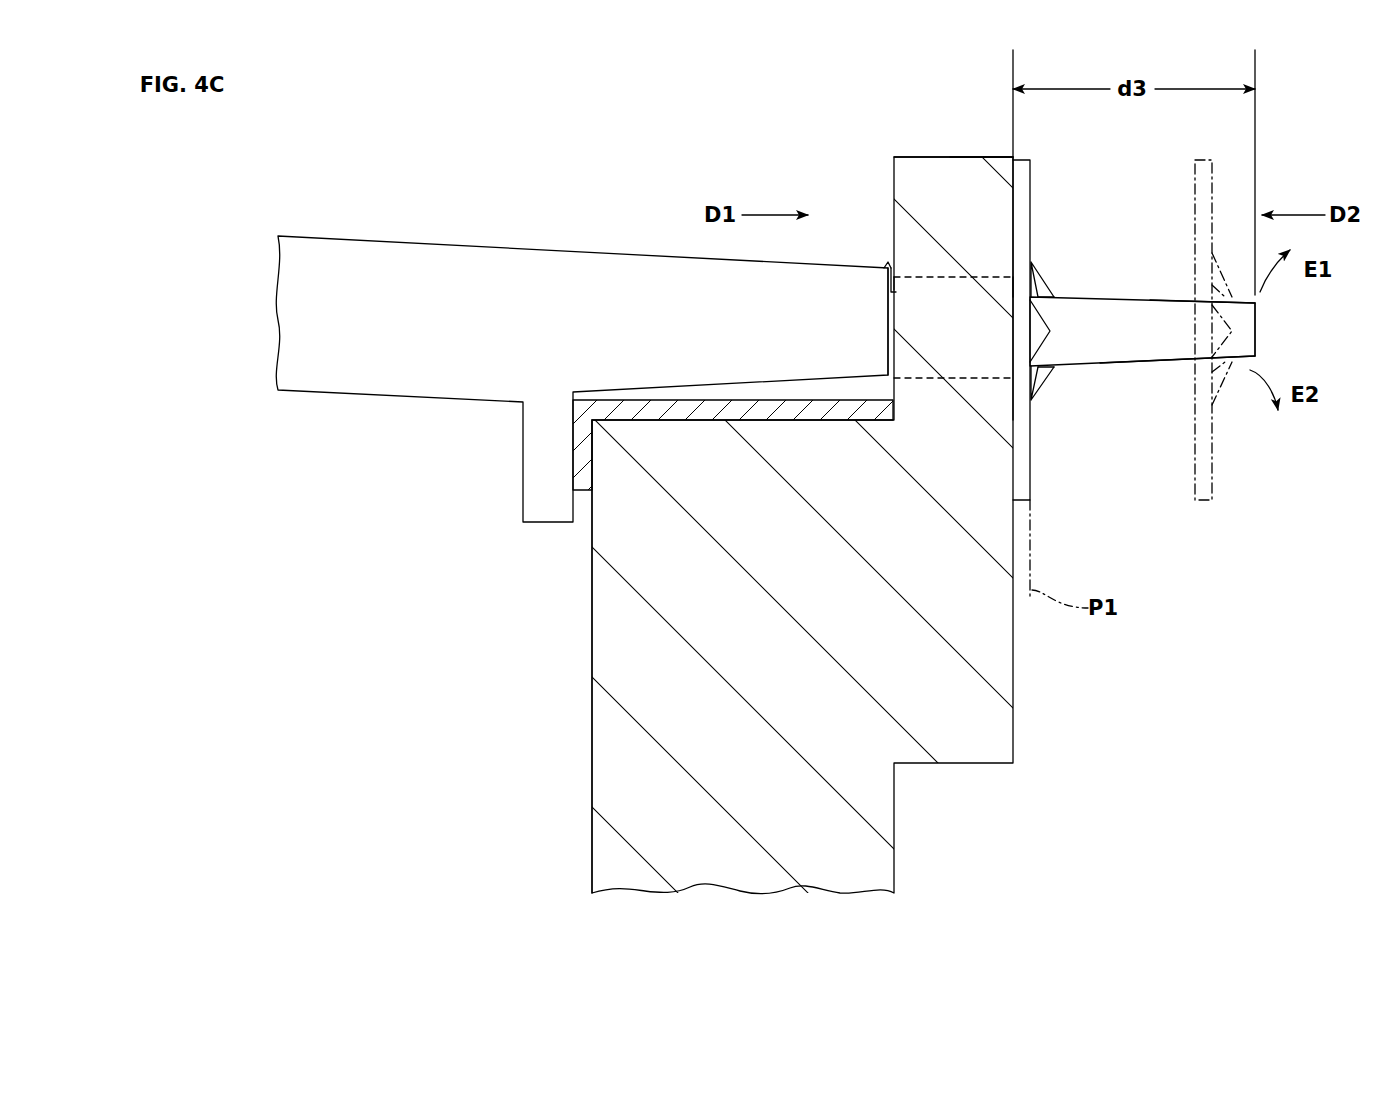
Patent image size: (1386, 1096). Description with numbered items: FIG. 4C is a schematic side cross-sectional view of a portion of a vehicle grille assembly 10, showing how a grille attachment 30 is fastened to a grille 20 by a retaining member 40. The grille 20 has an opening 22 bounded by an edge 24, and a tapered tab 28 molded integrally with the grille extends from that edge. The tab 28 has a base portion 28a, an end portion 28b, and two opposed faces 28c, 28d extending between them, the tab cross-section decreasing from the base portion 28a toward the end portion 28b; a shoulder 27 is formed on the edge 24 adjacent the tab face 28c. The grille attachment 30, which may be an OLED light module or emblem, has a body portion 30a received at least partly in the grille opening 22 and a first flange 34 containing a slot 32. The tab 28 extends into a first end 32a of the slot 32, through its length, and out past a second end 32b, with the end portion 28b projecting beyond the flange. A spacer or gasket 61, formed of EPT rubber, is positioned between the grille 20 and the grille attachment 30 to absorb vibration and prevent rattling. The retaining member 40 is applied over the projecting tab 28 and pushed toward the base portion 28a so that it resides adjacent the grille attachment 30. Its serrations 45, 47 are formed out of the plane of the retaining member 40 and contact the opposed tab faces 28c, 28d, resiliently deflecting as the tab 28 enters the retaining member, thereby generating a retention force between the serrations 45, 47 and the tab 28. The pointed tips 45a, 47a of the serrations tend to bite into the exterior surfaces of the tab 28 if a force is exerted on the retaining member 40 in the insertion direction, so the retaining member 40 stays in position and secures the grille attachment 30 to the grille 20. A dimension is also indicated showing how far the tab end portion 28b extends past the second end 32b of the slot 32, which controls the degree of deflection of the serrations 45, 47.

The vehicle grille assembly 10 is at (657, 228).
The grille 20 is at (417, 272).
The opening 22 is at (545, 672).
The edge 24 is at (888, 333).
The shoulder 27 is at (886, 264).
The tab 28 is at (1092, 292).
The base portion 28a is at (896, 285).
The end portion 28b is at (1258, 322).
The tab face 28c is at (1160, 300).
The tab face 28d is at (1113, 363).
The grille attachment 30 is at (928, 150).
The body portion 30a is at (612, 572).
The slot 32 is at (945, 320).
The first end 32a is at (880, 290).
The second end 32b is at (1045, 295).
The first flange 34 is at (980, 175).
The retaining member 40 is at (1030, 502).
The serration 45 is at (1040, 385).
The tip 45a is at (1055, 370).
The serration 47 is at (1040, 290).
The tip 47a is at (1062, 300).
The spacer or gasket 61 is at (582, 450).